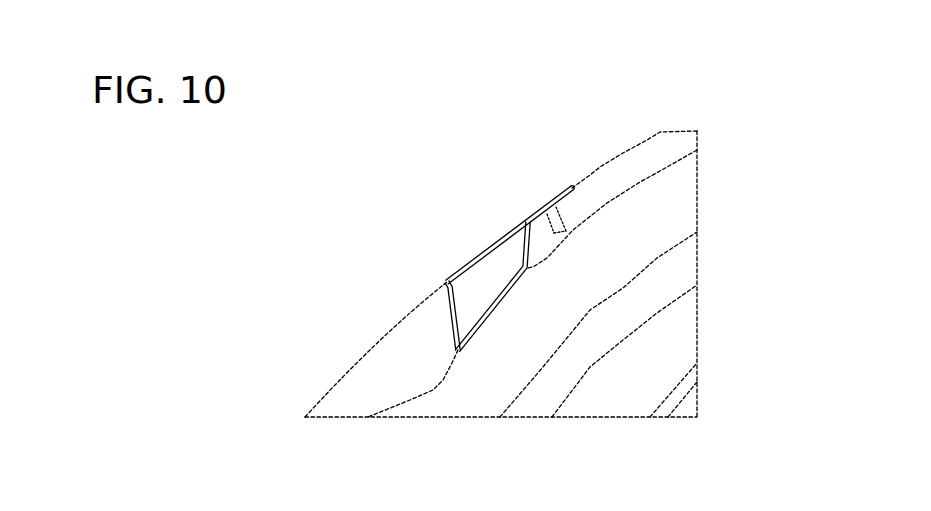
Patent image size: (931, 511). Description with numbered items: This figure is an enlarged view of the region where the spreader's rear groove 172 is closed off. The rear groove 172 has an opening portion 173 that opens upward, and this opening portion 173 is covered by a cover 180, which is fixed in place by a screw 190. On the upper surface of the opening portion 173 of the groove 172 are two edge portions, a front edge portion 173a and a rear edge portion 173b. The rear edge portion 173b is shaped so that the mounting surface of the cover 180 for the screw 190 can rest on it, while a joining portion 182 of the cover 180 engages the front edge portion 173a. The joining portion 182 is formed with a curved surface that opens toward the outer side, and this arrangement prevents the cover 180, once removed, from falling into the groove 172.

The rear groove 172 is at (653, 221).
The opening portion 173 is at (498, 300).
The front edge portion 173a is at (462, 266).
The rear edge portion 173b is at (538, 207).
The cover 180 is at (483, 249).
The joining portion 182 is at (447, 281).
The screw 190 is at (567, 212).